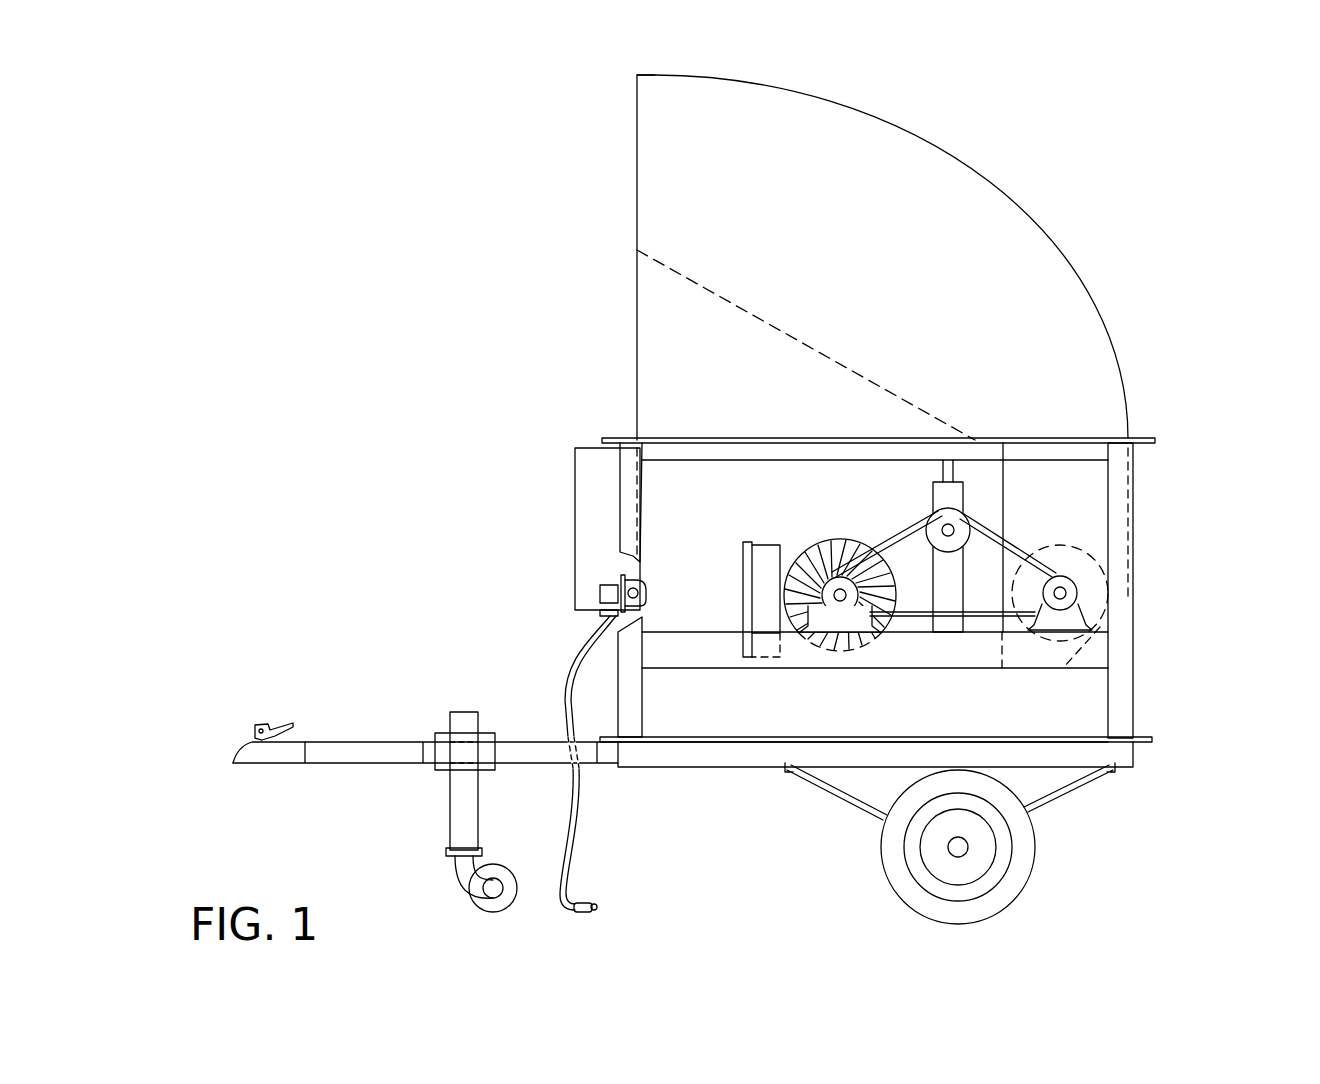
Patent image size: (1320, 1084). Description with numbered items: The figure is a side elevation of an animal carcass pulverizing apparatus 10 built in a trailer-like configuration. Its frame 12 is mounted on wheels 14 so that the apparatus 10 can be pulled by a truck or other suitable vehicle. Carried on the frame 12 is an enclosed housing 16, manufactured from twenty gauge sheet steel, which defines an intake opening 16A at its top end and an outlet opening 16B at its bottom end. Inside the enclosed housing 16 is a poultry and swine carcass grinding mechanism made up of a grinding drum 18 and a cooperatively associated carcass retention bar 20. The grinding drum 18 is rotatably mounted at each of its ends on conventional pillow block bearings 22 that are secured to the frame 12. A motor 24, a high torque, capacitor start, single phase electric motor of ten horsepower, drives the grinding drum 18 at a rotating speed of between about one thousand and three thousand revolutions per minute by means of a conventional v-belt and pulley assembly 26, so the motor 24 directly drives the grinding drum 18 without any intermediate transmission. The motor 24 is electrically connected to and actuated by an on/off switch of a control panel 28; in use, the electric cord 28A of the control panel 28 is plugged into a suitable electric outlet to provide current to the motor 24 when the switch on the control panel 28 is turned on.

The animal carcass pulverizing apparatus 10 is at (1192, 253).
The frame 12 is at (1133, 645).
The wheels 14 is at (503, 868).
The enclosed housing 16 is at (976, 173).
The intake opening 16A is at (655, 78).
The outlet opening 16B is at (1040, 668).
The grinding drum 18 is at (1058, 545).
The carcass retention bar 20 is at (1013, 558).
The pillow block bearings 22 is at (1078, 580).
The motor 24 is at (832, 540).
The v-belt and pulley assembly 26 is at (905, 530).
The control panel 28 is at (576, 527).
The electric cord 28A is at (578, 848).